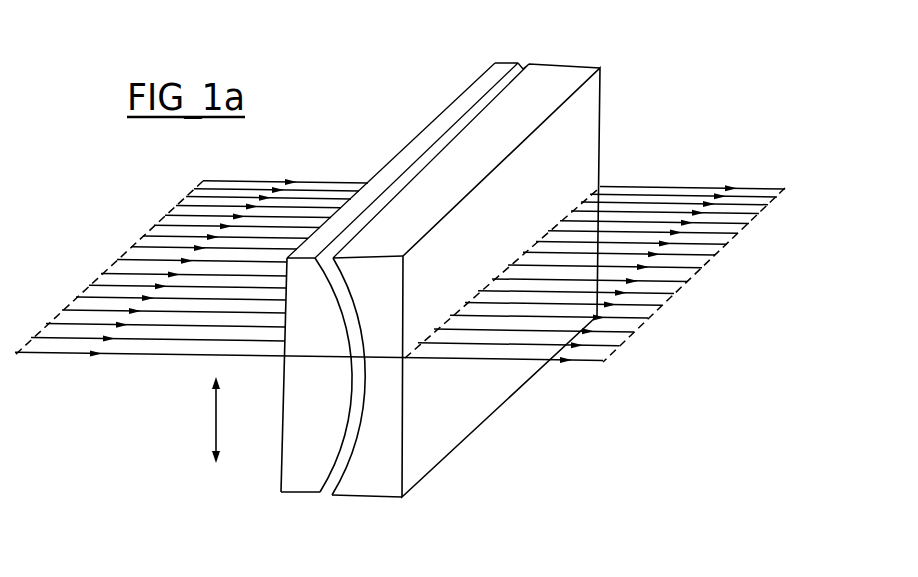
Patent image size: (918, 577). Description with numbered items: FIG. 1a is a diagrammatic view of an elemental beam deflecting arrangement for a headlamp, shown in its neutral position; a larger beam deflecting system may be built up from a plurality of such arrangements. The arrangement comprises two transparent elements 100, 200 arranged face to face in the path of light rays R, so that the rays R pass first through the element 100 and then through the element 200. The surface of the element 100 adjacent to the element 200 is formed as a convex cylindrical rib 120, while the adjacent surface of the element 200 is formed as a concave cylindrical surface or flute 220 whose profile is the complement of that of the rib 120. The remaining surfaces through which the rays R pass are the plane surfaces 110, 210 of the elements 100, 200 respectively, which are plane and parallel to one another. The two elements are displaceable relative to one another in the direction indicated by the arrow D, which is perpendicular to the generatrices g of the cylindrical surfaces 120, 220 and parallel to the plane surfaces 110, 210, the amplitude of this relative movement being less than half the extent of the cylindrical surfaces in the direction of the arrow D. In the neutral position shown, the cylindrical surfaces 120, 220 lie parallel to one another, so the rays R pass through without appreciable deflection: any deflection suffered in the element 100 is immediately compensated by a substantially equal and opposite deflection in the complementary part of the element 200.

The transparent element 100 is at (412, 149).
The plane surface 110 is at (281, 446).
The convex cylindrical rib 120 is at (347, 434).
The transparent element 200 is at (564, 77).
The plane surface 210 is at (403, 311).
The concave cylindrical surface or flute 220 is at (356, 318).
The generatrices of the cylindrical surfaces g is at (331, 482).
The light rays R is at (400, 271).
The arrow indicating direction of relative displacement D is at (228, 420).